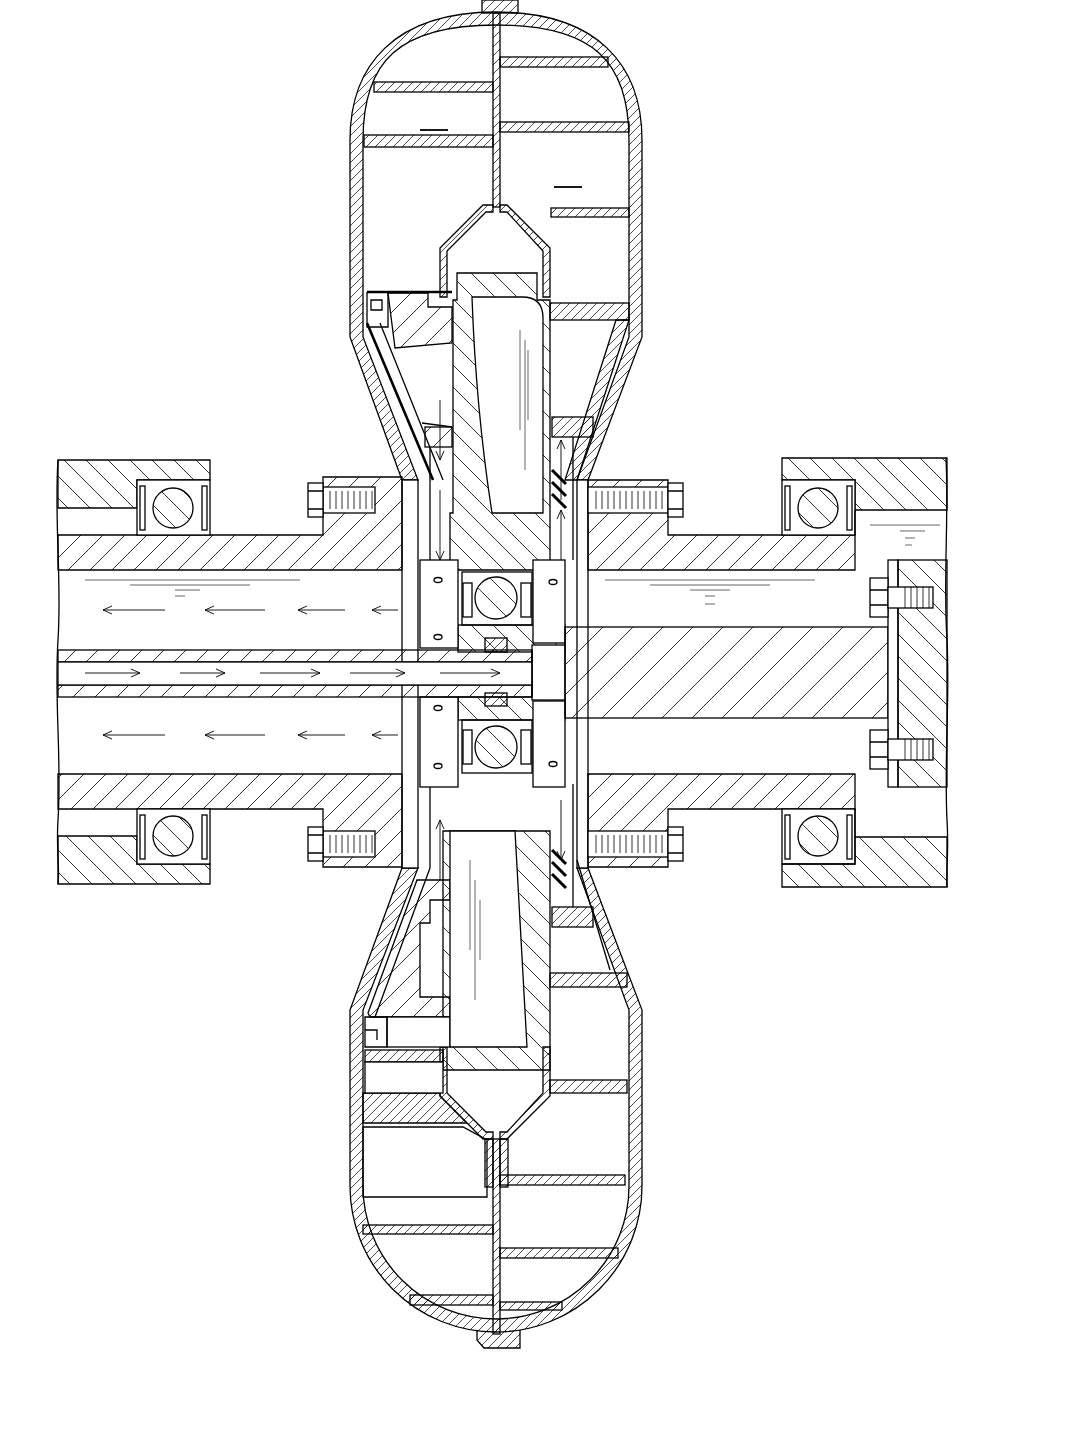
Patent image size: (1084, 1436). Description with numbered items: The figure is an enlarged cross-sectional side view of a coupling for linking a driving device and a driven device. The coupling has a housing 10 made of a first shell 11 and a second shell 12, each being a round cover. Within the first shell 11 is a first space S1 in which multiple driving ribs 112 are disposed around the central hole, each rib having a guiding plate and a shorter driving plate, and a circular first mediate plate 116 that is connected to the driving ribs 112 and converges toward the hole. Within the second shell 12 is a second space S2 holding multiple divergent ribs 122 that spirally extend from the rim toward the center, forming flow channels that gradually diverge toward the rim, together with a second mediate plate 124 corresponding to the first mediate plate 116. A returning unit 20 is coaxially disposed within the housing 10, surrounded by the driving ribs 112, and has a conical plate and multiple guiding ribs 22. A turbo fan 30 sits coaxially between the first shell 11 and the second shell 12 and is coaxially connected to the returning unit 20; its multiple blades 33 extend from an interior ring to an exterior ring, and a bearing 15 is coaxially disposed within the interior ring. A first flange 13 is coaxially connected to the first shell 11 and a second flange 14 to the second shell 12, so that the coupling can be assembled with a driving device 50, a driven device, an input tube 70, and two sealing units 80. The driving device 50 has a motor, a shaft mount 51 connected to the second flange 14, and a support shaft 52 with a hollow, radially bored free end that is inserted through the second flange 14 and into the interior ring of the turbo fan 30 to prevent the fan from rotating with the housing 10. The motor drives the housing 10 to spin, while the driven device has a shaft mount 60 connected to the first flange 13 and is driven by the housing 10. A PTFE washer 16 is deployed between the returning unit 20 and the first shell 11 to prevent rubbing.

The housing 10 is at (284, 272).
The first shell 11 is at (336, 84).
The second shell 12 is at (613, 29).
The first flange 13 is at (292, 803).
The second flange 14 is at (747, 797).
The bearing 15 is at (495, 598).
The washer 16 is at (375, 1048).
The returning unit 20 is at (402, 1076).
The guiding ribs 22 is at (425, 1000).
The turbo fan 30 is at (580, 341).
The blades 33 is at (530, 370).
The driving device 50 is at (888, 428).
The shaft mount 51 is at (890, 880).
The support shaft 52 is at (735, 635).
The shaft mount 60 is at (124, 912).
The input tube 70 is at (288, 693).
The sealing units 80 is at (565, 743).
The driving ribs 112 is at (458, 70).
The first mediate plate 116 is at (455, 238).
The divergent ribs 122 is at (546, 109).
The second mediate plate 124 is at (533, 222).
The first space S1 is at (434, 114).
The second space S2 is at (568, 171).